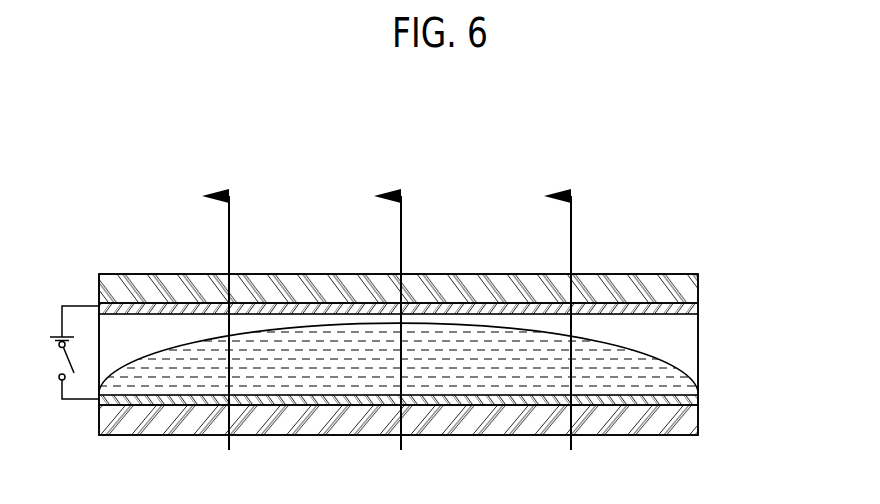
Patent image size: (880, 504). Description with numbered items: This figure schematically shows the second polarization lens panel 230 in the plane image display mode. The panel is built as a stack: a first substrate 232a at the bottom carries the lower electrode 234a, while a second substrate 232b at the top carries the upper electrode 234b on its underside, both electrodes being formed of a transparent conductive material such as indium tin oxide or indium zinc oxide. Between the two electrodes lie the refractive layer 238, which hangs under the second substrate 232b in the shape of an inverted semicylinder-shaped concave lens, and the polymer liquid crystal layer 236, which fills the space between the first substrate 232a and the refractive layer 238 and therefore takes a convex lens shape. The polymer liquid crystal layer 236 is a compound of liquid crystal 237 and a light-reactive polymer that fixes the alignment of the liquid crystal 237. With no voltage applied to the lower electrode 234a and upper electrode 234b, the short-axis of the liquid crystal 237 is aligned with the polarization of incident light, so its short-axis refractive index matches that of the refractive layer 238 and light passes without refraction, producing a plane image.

The second polarization lens panel 230 is at (772, 287).
The second substrate 232b is at (682, 290).
The upper electrode 234b is at (684, 308).
The refractive layer 238 is at (675, 338).
The liquid crystal 237 is at (668, 372).
The polymer liquid crystal layer 236 is at (680, 384).
The lower electrode 234a is at (680, 400).
The first substrate 232a is at (682, 428).